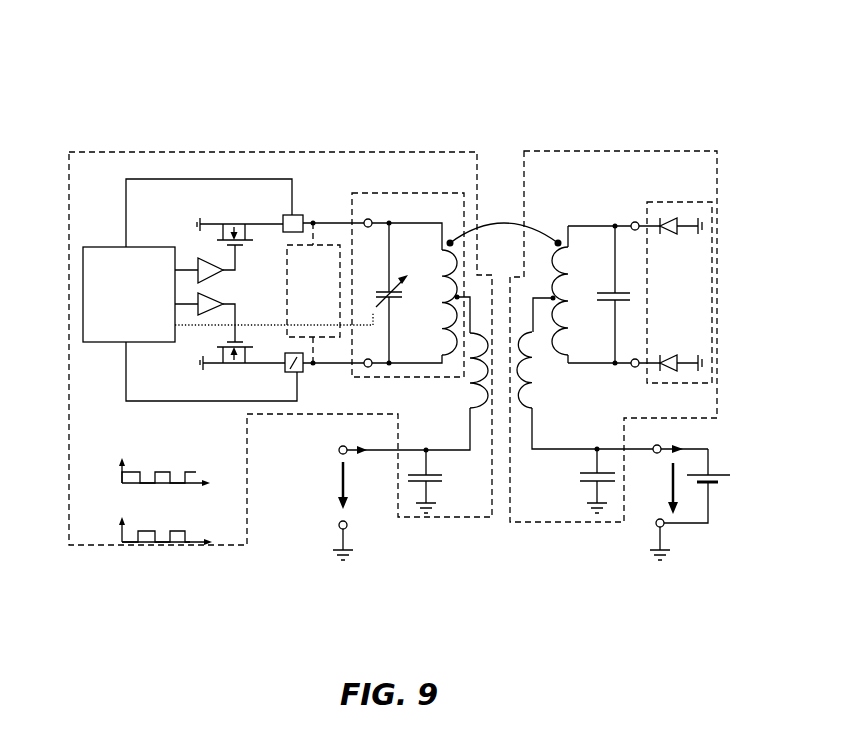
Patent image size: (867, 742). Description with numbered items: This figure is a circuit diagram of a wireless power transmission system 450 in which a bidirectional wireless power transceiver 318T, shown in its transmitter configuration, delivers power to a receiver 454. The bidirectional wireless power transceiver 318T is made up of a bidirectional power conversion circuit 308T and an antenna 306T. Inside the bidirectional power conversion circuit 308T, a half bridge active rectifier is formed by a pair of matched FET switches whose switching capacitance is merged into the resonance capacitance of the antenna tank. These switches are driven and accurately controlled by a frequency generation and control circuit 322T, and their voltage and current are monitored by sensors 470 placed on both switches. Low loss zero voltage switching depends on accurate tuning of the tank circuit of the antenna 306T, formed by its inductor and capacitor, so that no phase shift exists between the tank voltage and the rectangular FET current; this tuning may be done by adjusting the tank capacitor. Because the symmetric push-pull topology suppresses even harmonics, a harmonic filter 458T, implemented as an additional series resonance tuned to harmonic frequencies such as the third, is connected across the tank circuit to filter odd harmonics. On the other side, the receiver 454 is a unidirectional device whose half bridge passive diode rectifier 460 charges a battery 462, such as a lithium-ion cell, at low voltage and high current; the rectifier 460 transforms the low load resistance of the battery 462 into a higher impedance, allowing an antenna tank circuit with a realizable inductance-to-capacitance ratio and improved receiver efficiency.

The wireless power transmission system 450 is at (449, 52).
The bidirectional wireless power transceiver 318T is at (224, 86).
The bidirectional power conversion circuit 308T is at (246, 152).
The frequency generation and control circuit 322T is at (129, 247).
The sensors 470 is at (302, 215).
The harmonic filter 458T is at (333, 339).
The antenna 306T is at (396, 193).
The receiver 454 is at (625, 151).
The half bridge passive diode rectifier 460 is at (703, 202).
The battery 462 is at (728, 468).